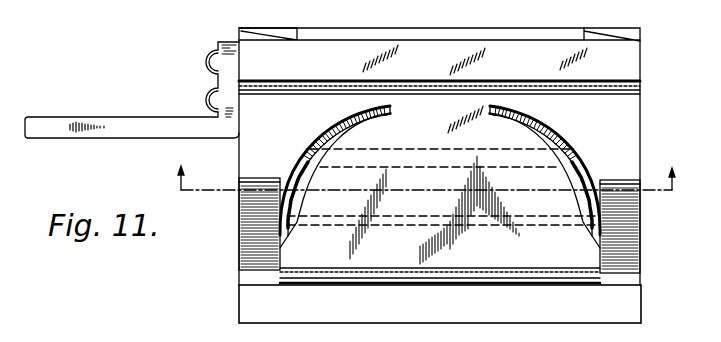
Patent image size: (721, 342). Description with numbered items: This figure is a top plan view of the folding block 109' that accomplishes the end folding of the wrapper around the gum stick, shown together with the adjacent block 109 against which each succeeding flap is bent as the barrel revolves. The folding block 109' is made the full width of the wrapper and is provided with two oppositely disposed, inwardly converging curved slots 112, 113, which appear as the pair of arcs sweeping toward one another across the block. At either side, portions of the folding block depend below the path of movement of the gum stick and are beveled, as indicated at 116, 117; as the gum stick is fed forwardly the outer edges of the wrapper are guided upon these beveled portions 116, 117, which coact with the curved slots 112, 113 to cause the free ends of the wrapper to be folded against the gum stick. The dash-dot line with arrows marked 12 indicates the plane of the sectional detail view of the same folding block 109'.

The block 109 is at (440, 304).
The folding-block 109' is at (361, 156).
The curved slot 112 is at (322, 133).
The curved slot 113 is at (562, 137).
The beveled portion 116 is at (240, 257).
The beveled portion 117 is at (630, 255).
The section line of Figure 12 is at (432, 191).